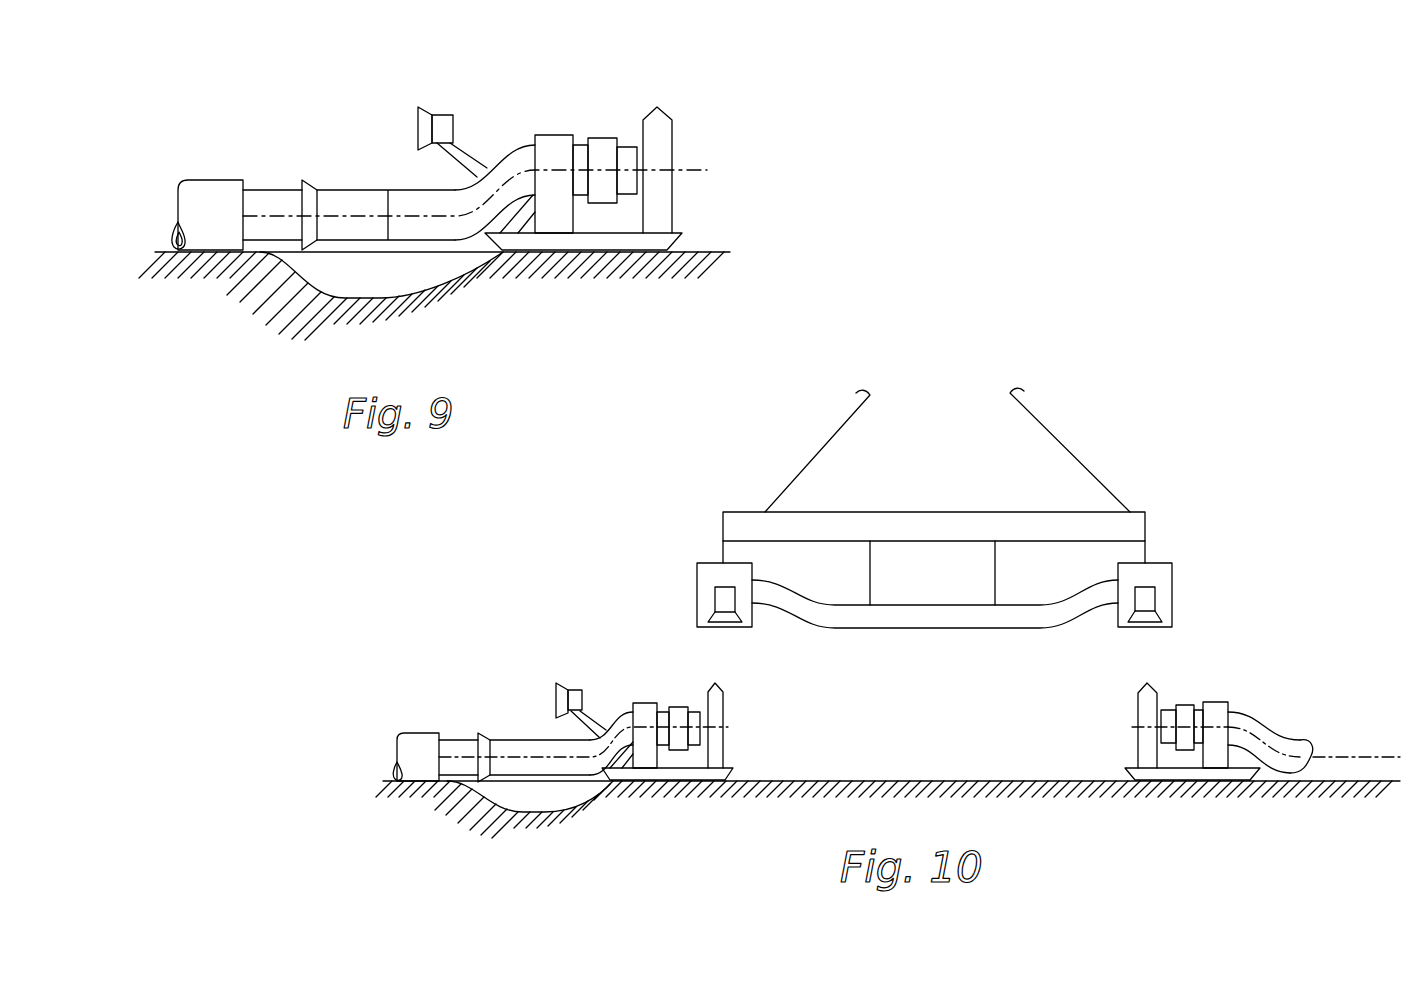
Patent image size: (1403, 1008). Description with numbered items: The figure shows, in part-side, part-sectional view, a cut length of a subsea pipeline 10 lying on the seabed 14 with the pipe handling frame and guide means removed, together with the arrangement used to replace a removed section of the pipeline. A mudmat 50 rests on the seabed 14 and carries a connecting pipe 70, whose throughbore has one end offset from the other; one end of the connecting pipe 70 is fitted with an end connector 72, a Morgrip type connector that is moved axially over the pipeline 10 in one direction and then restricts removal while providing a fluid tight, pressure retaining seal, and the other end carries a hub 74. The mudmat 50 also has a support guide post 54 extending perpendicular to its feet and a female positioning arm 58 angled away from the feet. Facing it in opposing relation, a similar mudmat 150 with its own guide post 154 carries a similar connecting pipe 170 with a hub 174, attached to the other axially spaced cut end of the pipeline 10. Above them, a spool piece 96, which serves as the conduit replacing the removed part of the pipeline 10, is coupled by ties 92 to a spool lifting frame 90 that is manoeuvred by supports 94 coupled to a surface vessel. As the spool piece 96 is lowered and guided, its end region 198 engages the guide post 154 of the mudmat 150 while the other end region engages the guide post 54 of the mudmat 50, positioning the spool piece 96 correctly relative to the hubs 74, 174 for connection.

In FIG. 9, the subsea pipeline 10 is at (491, 147).
In FIG. 9, the seabed 14 is at (706, 265).
In FIG. 10, the seabed 14 is at (1030, 793).
In FIG. 9, the mudmat 50 is at (648, 162).
In FIG. 10, the mudmat 50 is at (563, 758).
In FIG. 9, the support guide post 54 is at (663, 138).
In FIG. 10, the support guide post 54 is at (714, 700).
In FIG. 9, the female positioning arm 58 is at (443, 120).
In FIG. 10, the female positioning arm 58 is at (574, 693).
In FIG. 10, the connecting pipe 70 is at (530, 730).
In FIG. 9, the end connector 72 is at (355, 205).
In FIG. 9, the hub 74 is at (604, 150).
In FIG. 10, the hub 74 is at (678, 712).
In FIG. 10, the spool lifting frame 90 is at (955, 539).
In FIG. 10, the ties 92 is at (870, 556).
In FIG. 10, the supports 94 is at (816, 452).
In FIG. 10, the spool piece 96 is at (1013, 616).
In FIG. 10, the mudmat 150 is at (1262, 763).
In FIG. 10, the guide post 154 is at (1148, 697).
In FIG. 10, the connecting pipe 170 is at (1283, 727).
In FIG. 10, the hub 174 is at (1184, 708).
In FIG. 10, the end region / hub 198 is at (1157, 573).